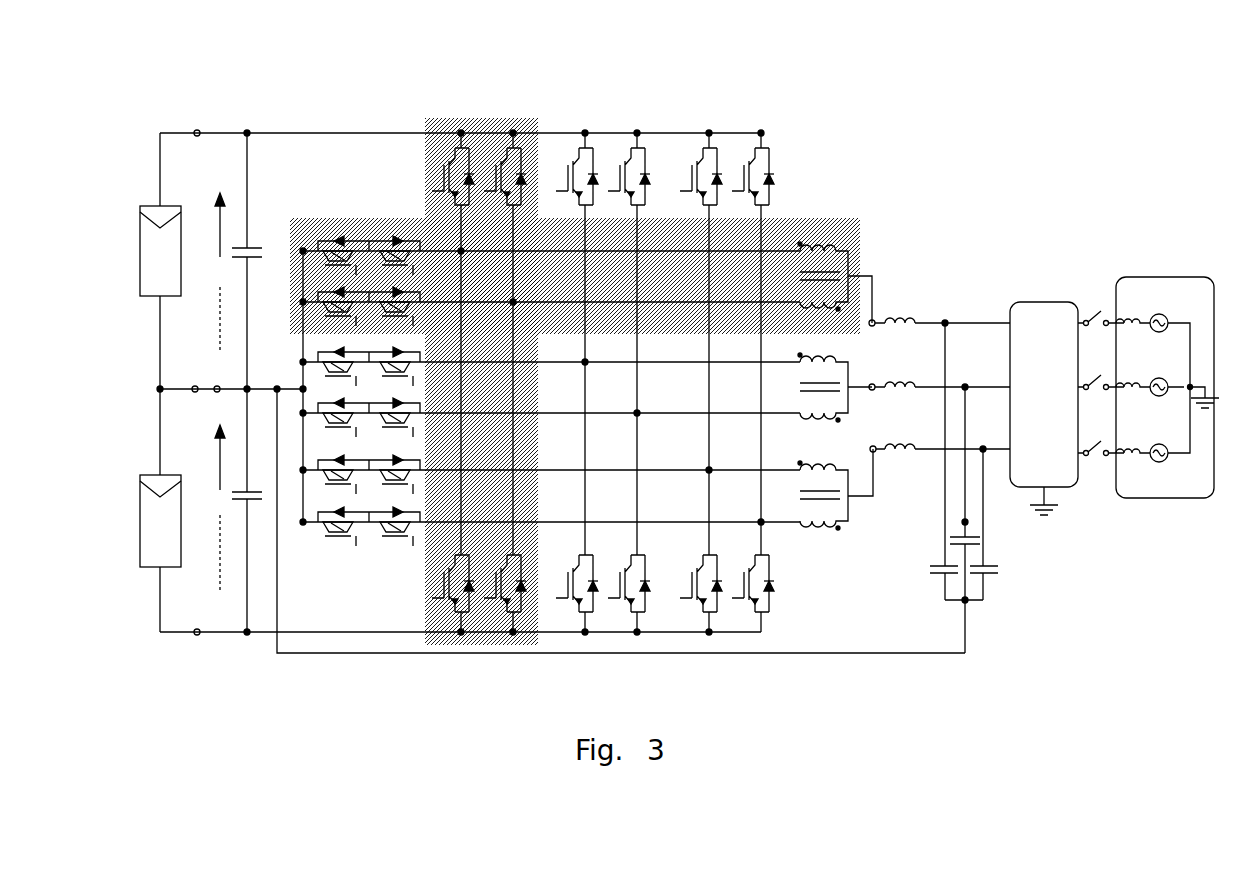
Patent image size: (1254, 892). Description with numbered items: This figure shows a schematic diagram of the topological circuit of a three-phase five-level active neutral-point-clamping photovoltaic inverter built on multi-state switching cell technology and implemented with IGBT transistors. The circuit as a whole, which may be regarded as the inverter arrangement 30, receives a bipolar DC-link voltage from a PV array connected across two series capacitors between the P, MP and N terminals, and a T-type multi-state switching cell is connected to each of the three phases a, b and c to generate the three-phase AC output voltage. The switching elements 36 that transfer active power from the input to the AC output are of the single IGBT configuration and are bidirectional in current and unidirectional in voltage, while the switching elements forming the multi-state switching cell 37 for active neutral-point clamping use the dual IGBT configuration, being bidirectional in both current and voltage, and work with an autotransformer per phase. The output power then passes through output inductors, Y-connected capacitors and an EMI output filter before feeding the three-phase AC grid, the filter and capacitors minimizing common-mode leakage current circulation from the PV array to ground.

The three-phase five-level inverter system 30 is at (679, 376).
The switch (IGBT with anti-parallel diode) 36 is at (610, 376).
The multi-state switching cell (MSSC) 37 is at (374, 226).